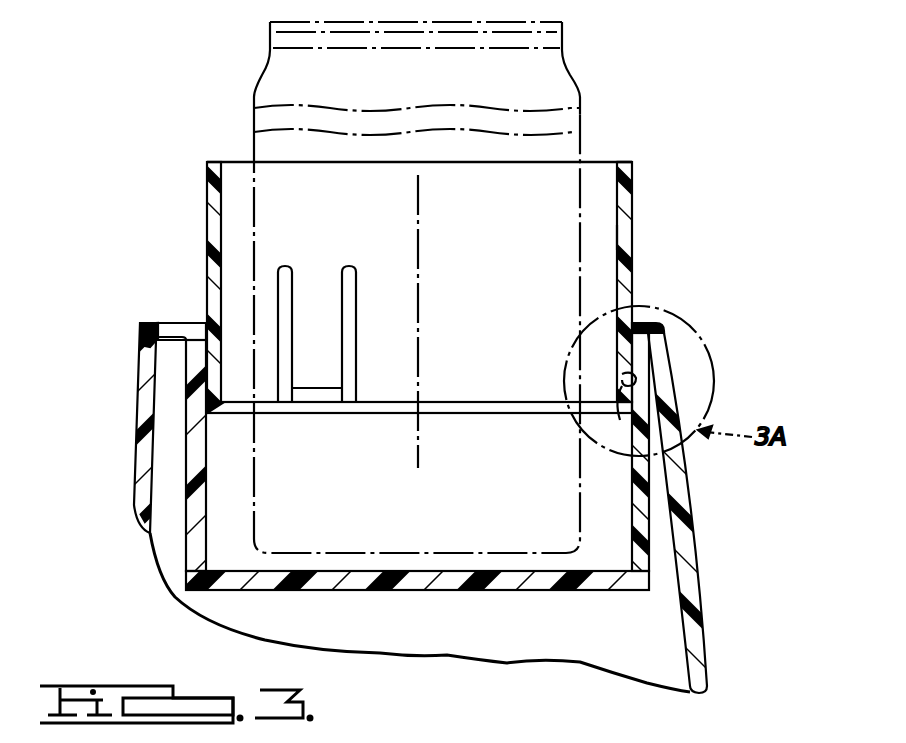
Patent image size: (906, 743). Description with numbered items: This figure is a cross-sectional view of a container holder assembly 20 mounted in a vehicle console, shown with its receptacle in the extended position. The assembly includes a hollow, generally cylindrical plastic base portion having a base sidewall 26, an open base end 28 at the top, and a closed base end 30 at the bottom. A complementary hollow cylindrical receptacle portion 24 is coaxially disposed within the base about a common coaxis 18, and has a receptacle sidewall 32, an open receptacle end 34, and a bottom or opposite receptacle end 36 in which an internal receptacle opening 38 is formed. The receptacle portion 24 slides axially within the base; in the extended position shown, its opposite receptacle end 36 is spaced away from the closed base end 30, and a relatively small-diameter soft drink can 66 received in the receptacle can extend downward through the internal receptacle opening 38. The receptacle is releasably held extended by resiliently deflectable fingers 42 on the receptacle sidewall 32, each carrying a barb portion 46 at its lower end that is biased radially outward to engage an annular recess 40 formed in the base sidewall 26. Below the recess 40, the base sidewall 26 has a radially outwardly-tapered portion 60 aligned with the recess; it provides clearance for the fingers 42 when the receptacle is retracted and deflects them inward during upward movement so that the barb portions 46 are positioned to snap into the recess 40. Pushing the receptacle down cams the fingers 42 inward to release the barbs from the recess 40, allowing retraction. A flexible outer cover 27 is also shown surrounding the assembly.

The coaxis 18 is at (419, 263).
The container holder assembly 20 is at (722, 211).
The receptacle portion 24 is at (200, 192).
The base sidewall 26 is at (207, 544).
The outer cover 27 is at (178, 462).
The open base end 28 is at (206, 325).
The closed base end 30 is at (233, 583).
The receptacle sidewall 32 is at (612, 238).
The open receptacle end 34 is at (625, 164).
The opposite receptacle end 36 is at (246, 414).
The internal receptacle opening 38 is at (243, 416).
The recess 40 is at (625, 371).
The resiliently deflectable finger 42 is at (625, 288).
The barb portion 46 is at (623, 395).
The outwardly-tapered portion 60 is at (640, 552).
The soft drink can 66 is at (568, 154).